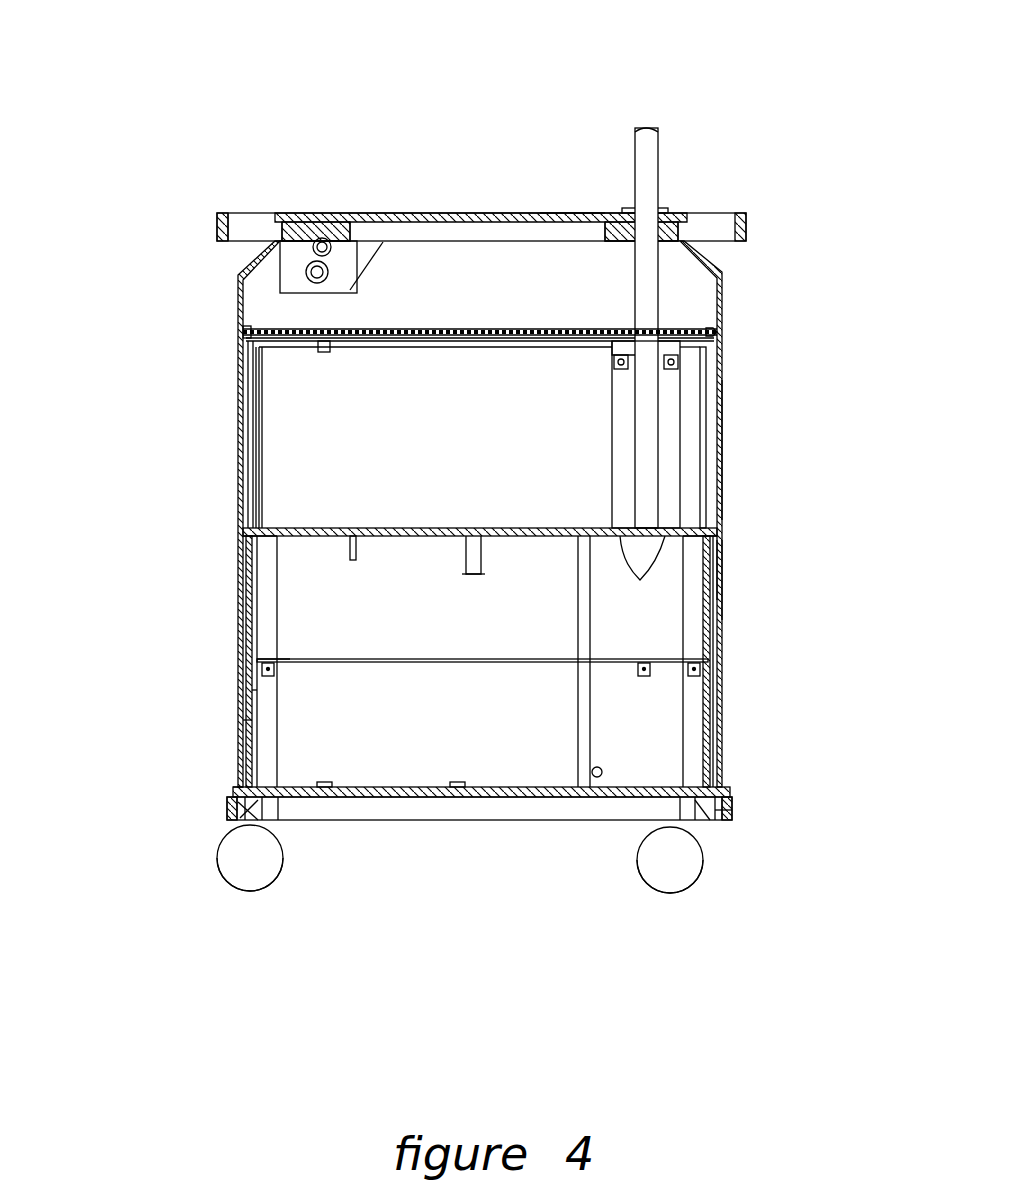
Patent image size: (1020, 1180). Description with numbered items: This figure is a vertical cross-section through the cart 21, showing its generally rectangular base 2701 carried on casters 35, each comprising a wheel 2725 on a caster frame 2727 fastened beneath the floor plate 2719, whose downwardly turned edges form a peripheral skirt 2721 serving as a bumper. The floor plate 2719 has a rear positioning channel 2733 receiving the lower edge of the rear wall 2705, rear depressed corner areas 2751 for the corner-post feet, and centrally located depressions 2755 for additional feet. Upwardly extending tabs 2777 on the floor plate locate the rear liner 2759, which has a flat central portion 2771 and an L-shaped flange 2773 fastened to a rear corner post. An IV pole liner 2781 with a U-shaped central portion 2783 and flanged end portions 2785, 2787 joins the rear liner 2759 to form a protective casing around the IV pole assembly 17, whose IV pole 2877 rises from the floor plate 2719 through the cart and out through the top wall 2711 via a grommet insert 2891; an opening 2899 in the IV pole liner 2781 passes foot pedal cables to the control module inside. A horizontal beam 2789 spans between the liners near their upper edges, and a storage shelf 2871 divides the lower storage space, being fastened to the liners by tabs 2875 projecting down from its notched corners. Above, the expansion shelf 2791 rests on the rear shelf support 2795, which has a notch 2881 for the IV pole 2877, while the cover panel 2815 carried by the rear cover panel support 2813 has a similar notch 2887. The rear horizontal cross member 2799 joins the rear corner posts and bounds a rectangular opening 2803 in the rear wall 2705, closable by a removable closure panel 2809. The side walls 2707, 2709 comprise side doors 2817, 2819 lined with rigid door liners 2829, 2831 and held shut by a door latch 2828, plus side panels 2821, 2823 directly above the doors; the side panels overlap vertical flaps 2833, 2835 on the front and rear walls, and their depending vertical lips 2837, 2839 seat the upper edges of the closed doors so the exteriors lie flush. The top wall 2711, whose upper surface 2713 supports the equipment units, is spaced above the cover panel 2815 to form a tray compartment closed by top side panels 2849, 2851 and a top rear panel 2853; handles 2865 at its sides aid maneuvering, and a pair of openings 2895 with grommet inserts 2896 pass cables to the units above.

The IV pole assembly 17 is at (662, 148).
The cart 21 is at (315, 206).
The casters 35 is at (250, 910).
The base 2701 is at (247, 800).
The rear wall 2705 is at (275, 433).
The side wall 2707 is at (740, 477).
The side wall 2709 is at (224, 412).
The top wall 2711 is at (510, 206).
The upper surface 2713 is at (570, 212).
The floor plate 2719 is at (518, 798).
The peripheral skirt 2721 is at (728, 820).
The wheel 2725 is at (232, 884).
The caster frame 2727 is at (288, 808).
The rear positioning channel 2733 is at (380, 798).
The rear depressed corner areas 2751 is at (232, 822).
The centrally located depressions 2755 is at (453, 798).
The rear liner 2759 is at (358, 732).
The central portion 2771 is at (300, 690).
The L-shaped flange 2773 is at (265, 720).
The tabs 2777 is at (324, 783).
The IV pole liner 2781 is at (670, 630).
The U-shaped central portion 2783 is at (712, 748).
The flanged end portion 2785 is at (583, 704).
The flanged end portion 2787 is at (735, 802).
The horizontal beam 2789 is at (482, 576).
The expansion shelf 2791 is at (682, 528).
The rear shelf support 2795 is at (390, 538).
The cross member 2799 is at (716, 343).
The rectangular opening 2803 is at (262, 395).
The closure panel 2809 is at (518, 490).
The rear cover panel support 2813 is at (318, 350).
The cover panel 2815 is at (268, 314).
The side door 2817 is at (722, 600).
The side door 2819 is at (252, 628).
The side panel 2821 is at (722, 535).
The side panel 2823 is at (240, 518).
The door latch 2828 is at (250, 590).
The door liner 2829 is at (694, 772).
The door liner 2831 is at (221, 792).
The vertical flap 2833 is at (702, 380).
The vertical flap 2835 is at (258, 482).
The vertical lip 2837 is at (722, 560).
The vertical lip 2839 is at (250, 553).
The top side panel 2849 is at (722, 299).
The top side panel 2851 is at (242, 283).
The rear panel 2853 is at (505, 285).
The handles 2865 is at (218, 228).
The storage shelf 2871 is at (290, 659).
The tabs 2875 is at (275, 674).
The IV pole 2877 is at (632, 208).
The notch 2881 is at (640, 578).
The notch 2887 is at (612, 353).
The grommet insert 2891 is at (673, 211).
The openings 2895 is at (347, 230).
The grommet inserts 2896 is at (333, 283).
The opening 2899 is at (597, 780).